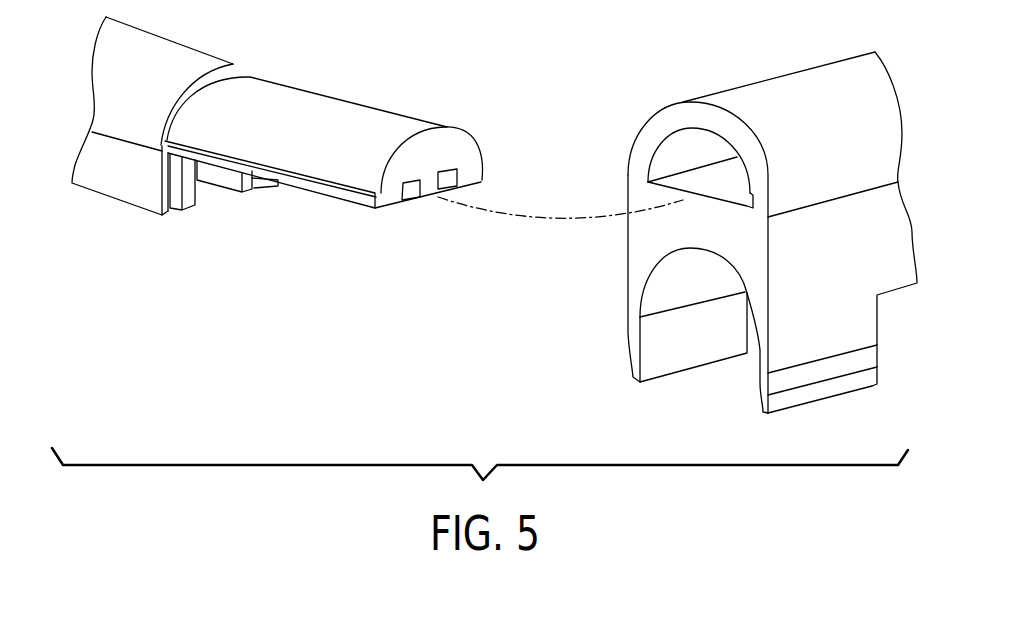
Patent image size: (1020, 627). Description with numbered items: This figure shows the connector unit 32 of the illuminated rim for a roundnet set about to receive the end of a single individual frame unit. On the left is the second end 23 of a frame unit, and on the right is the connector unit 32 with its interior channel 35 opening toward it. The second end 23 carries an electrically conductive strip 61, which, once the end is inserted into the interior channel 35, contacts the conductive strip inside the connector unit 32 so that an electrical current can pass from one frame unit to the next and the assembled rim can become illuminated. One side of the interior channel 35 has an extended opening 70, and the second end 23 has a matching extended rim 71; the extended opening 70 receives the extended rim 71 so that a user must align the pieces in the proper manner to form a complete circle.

The second end 23 is at (380, 115).
The extended rim 71 is at (330, 197).
The electrically conductive strip 61 is at (411, 192).
The connector unit 32 is at (840, 78).
The interior channel 35 is at (687, 148).
The extended opening 70 is at (745, 204).